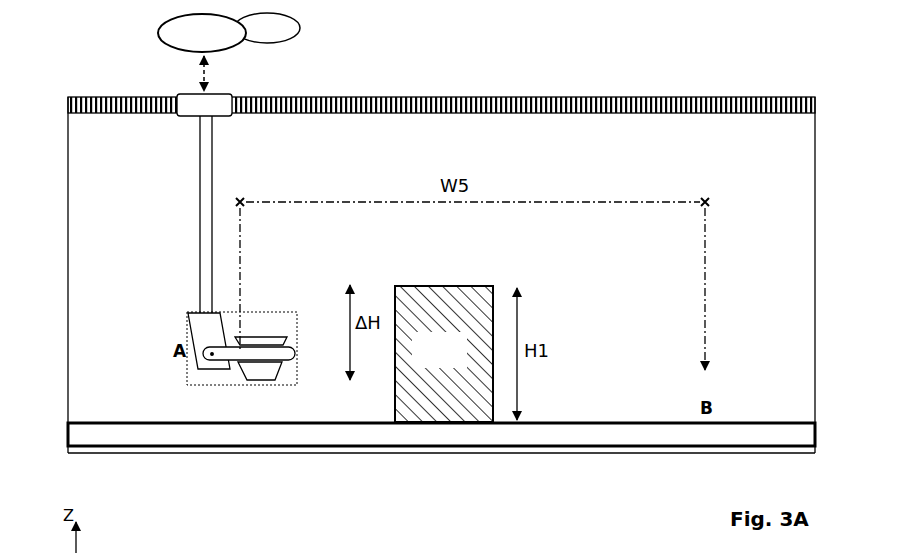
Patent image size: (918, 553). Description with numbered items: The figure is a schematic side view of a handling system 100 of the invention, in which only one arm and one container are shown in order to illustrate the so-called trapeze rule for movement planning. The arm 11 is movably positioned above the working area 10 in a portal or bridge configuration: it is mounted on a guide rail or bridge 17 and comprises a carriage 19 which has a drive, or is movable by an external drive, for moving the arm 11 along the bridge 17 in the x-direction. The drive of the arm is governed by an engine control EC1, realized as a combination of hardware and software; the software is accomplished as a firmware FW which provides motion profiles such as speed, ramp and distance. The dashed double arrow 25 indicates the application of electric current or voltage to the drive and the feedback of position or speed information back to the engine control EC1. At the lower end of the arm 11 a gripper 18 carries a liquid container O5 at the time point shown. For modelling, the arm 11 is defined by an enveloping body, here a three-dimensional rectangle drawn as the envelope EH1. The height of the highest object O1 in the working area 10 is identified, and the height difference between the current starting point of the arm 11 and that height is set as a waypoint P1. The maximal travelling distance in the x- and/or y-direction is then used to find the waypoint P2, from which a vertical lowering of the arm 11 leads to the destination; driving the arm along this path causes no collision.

The working area 10 is at (148, 437).
The arm 11 is at (155, 300).
The guide rail or bridge 17 is at (328, 100).
The gripper 18 is at (290, 352).
The carriage 19 is at (188, 94).
The dashed double arrow 25 is at (207, 78).
The system 100 is at (793, 77).
The engine control EC1 is at (223, 42).
The firmware FW is at (267, 28).
The envelope EH1 is at (187, 378).
The highest object O1 is at (444, 354).
The liquid container O5 is at (275, 337).
The waypoint P1 is at (243, 196).
The waypoint P2 is at (707, 197).